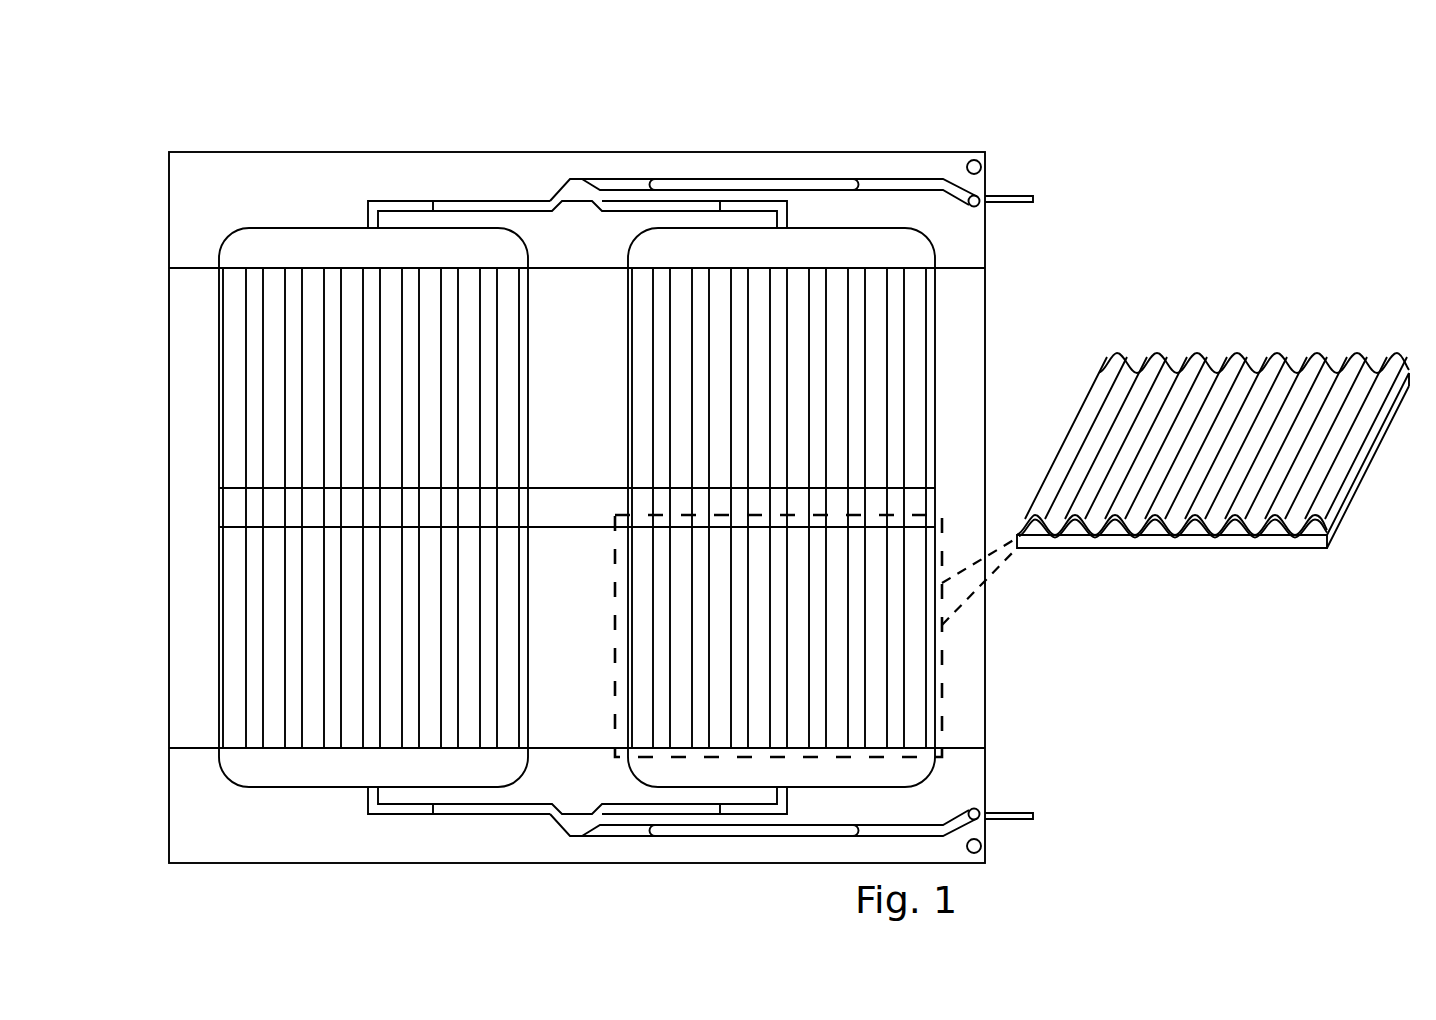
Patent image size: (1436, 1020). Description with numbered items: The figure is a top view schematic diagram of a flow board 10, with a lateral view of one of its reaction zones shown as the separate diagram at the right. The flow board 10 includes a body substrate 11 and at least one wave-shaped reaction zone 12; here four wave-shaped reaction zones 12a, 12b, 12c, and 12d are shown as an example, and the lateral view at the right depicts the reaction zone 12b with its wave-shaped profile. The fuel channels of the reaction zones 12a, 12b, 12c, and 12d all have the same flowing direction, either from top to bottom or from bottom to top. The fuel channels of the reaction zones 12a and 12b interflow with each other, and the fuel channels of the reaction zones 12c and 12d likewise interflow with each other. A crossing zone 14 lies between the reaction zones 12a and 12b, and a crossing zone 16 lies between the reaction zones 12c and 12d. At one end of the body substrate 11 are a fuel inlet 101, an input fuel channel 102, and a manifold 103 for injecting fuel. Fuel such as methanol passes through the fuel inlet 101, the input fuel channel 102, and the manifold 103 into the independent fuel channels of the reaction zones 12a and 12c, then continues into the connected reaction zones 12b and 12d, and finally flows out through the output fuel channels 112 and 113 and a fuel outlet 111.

The flow board 10 is at (995, 122).
The body substrate 11 is at (990, 300).
The wave-shaped reaction zone 12 is at (203, 326).
The reaction zone 12a is at (938, 375).
The reaction zone 12b is at (938, 680).
The reaction zone 12c is at (219, 411).
The reaction zone 12d is at (219, 638).
The crossing zone 14 is at (930, 495).
The crossing zone 16 is at (228, 510).
The fuel inlet 101 is at (1012, 195).
The input fuel channel 102 is at (805, 186).
The manifold 103 is at (467, 207).
The fuel outlet 111 is at (1012, 820).
The output fuel channel 112 is at (688, 830).
The output fuel channel 113 is at (409, 808).